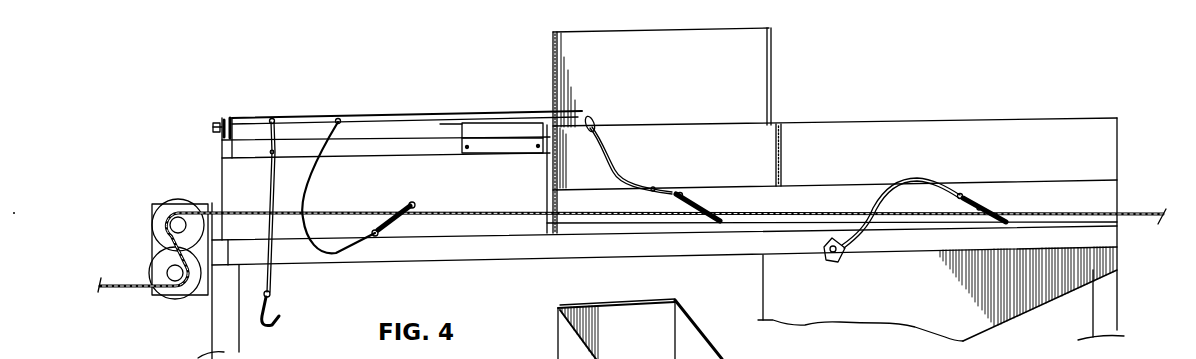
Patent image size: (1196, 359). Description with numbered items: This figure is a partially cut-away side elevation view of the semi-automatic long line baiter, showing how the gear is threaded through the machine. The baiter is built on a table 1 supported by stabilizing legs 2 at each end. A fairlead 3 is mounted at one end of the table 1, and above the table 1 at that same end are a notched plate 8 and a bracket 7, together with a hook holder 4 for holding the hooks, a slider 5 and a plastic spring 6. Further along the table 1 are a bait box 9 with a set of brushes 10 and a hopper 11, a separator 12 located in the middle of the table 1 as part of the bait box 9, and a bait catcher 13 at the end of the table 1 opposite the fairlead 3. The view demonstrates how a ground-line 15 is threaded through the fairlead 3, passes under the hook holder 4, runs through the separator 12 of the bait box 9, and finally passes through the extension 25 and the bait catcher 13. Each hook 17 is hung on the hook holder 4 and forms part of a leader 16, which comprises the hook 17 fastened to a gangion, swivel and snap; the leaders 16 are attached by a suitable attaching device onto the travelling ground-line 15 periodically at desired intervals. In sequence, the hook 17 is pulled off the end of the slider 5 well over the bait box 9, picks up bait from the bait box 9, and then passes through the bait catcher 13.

The table 1 is at (556, 258).
The stabilizing legs 2 is at (238, 335).
The fairlead 3 is at (187, 297).
The hook holder 4 is at (216, 127).
The slider 5 is at (588, 116).
The plastic spring 6 is at (289, 117).
The bracket 7 is at (219, 182).
The notched plate 8 is at (228, 118).
The bait box 9 is at (764, 138).
The brushes 10 is at (557, 177).
The hopper 11 is at (553, 45).
The separator 12 is at (666, 158).
The bait catcher 13 is at (921, 121).
The ground-line 15 is at (512, 217).
The leader 16 is at (271, 297).
The hook 17 is at (336, 128).
The extension 25 is at (998, 181).